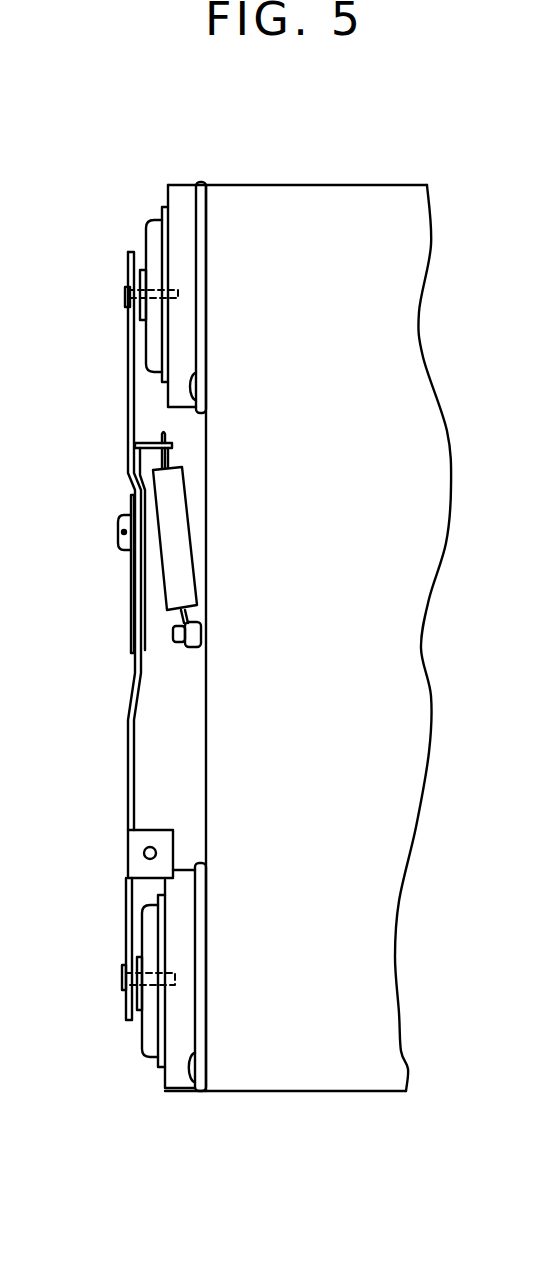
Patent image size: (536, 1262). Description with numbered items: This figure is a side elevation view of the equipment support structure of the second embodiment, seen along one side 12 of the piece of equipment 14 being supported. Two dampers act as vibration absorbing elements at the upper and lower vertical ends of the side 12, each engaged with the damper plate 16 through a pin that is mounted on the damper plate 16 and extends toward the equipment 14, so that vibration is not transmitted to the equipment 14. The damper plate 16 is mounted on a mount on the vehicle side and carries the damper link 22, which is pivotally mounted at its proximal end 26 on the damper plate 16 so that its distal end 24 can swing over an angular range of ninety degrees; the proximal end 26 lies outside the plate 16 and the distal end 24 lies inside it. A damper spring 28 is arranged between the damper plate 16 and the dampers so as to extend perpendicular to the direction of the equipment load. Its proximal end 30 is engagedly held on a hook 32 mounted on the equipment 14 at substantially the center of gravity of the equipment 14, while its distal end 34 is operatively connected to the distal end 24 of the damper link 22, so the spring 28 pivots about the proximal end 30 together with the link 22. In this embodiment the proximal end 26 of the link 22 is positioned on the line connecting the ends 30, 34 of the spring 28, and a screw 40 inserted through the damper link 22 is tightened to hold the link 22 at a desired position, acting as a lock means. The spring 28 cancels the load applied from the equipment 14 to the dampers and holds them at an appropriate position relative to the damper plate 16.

The side of the equipment 12 is at (202, 737).
The equipment 14 is at (352, 1078).
The damper plate 16 is at (128, 855).
The damper link 22 is at (137, 483).
The distal end of the damper link 24 is at (150, 440).
The proximal end of the damper link 26 is at (130, 638).
The damper spring 28 is at (180, 515).
The proximal end of the damper spring 30 is at (185, 618).
The hook 32 is at (200, 635).
The distal end of the damper spring 34 is at (168, 462).
The screw 40 is at (118, 538).